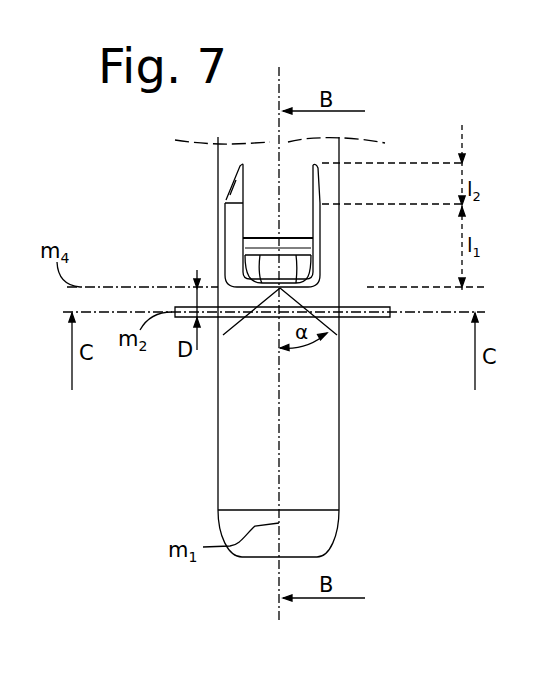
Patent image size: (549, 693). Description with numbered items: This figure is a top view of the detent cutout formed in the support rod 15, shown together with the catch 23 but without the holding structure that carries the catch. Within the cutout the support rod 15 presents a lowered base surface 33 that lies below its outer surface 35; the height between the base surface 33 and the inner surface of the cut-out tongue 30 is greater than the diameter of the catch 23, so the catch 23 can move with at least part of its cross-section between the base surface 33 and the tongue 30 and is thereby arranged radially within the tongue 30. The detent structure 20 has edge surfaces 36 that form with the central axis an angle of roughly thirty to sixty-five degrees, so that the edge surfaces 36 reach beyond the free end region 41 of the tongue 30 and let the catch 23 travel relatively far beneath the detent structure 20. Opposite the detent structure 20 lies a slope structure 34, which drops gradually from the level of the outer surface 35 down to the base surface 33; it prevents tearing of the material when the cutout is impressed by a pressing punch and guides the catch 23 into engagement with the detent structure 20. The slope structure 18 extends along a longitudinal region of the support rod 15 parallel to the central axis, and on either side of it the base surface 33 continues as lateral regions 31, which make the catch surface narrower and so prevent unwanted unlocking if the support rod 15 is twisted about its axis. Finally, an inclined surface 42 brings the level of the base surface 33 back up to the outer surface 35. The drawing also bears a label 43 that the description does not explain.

The support rod 15 is at (245, 437).
The slope structure 18 is at (243, 260).
The detent structure 20 is at (172, 268).
The catch 23 is at (386, 318).
The tongue 30 is at (273, 303).
The lateral regions 31 is at (225, 238).
The base surface 33 is at (230, 183).
The slope structure 34 is at (268, 243).
The outer surface 35 is at (315, 458).
The edge surfaces 36 is at (342, 314).
The free end region 41 is at (313, 239).
The inclined surface 42 is at (326, 189).
The shoulder 43 is at (314, 304).